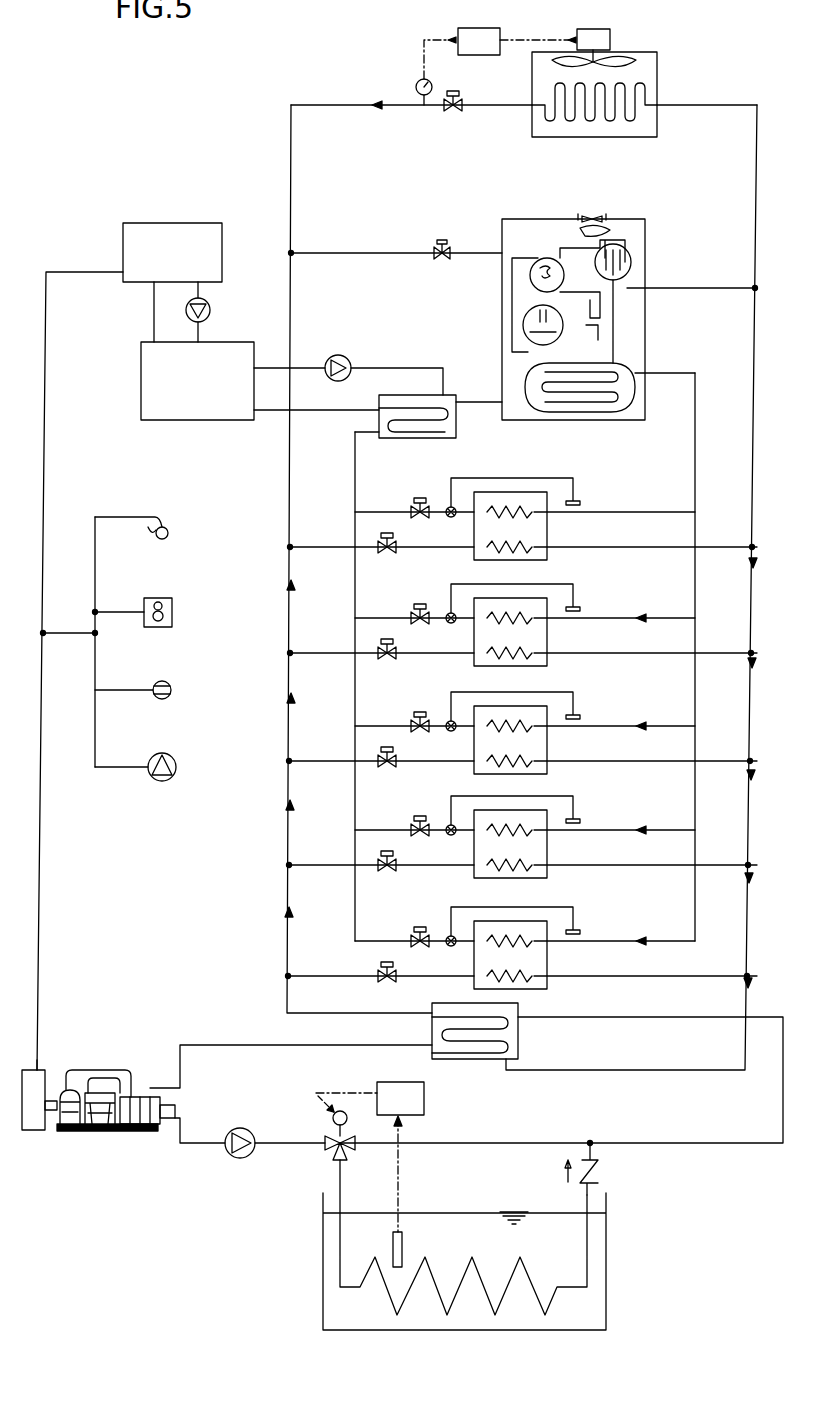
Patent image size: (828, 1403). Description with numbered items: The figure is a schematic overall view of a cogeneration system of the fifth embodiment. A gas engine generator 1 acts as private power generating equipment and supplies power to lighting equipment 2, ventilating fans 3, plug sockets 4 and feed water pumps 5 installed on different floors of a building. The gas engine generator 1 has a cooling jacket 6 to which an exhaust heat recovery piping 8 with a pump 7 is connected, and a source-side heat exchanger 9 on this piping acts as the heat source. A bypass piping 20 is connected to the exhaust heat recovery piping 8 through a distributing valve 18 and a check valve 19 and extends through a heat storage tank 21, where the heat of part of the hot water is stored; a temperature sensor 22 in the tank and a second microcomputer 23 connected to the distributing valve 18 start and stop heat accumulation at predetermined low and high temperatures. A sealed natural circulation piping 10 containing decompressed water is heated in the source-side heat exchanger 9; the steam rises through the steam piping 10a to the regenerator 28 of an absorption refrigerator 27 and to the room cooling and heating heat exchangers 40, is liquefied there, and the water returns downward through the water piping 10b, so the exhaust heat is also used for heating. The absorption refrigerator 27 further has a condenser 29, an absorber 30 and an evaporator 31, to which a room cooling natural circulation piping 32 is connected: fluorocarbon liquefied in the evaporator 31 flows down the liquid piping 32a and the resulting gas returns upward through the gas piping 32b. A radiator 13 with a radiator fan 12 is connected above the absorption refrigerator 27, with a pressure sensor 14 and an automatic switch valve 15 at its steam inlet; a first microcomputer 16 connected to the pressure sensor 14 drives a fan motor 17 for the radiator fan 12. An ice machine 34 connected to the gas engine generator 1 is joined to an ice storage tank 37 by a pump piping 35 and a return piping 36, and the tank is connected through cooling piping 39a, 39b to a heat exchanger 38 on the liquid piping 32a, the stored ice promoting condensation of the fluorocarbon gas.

The gas engine generator 1 is at (90, 1058).
The lighting equipment 2 is at (172, 530).
The ventilating fans 3 is at (173, 612).
The plug sockets 4 is at (172, 685).
The feed water pumps 5 is at (177, 762).
The cooling jacket 6 is at (153, 1130).
The pump 7 is at (246, 1126).
The exhaust heat recovery piping 8 is at (205, 1146).
The source-side heat exchanger 9 is at (520, 1038).
The natural circulation piping 10 is at (768, 690).
The steam piping 10a is at (288, 868).
The water piping 10b is at (751, 808).
The radiator fan 12 is at (618, 68).
The radiator 13 is at (634, 138).
The pressure sensor 14 is at (410, 85).
The automatic switch valve 15 is at (453, 112).
The first microcomputer 16 is at (482, 56).
The fan motor 17 is at (612, 38).
The distributing valve 18 is at (330, 1153).
The check valve 19 is at (604, 1172).
The bypass piping 20 is at (342, 1183).
The heat storage tank 21 is at (612, 1243).
The temperature sensor 22 is at (405, 1245).
The second microcomputer 23 is at (424, 1100).
The absorption refrigerator 27 is at (648, 332).
The regenerator 28 is at (530, 275).
The condenser 29 is at (635, 258).
The absorber 30 is at (524, 325).
The evaporator 31 is at (560, 412).
The room cooling natural circulation piping 32 is at (712, 446).
The liquid piping 32a is at (345, 584).
The gas piping 32b is at (695, 464).
The ice machine 34 is at (184, 222).
The pump piping 35 is at (200, 323).
The return piping 36 is at (152, 313).
The ice storage tank 37 is at (141, 385).
The heat exchanger 38 is at (432, 440).
The cooling piping 39a is at (310, 355).
The cooling piping 39b is at (325, 428).
The room cooling and heating heat exchangers 40 is at (548, 556).